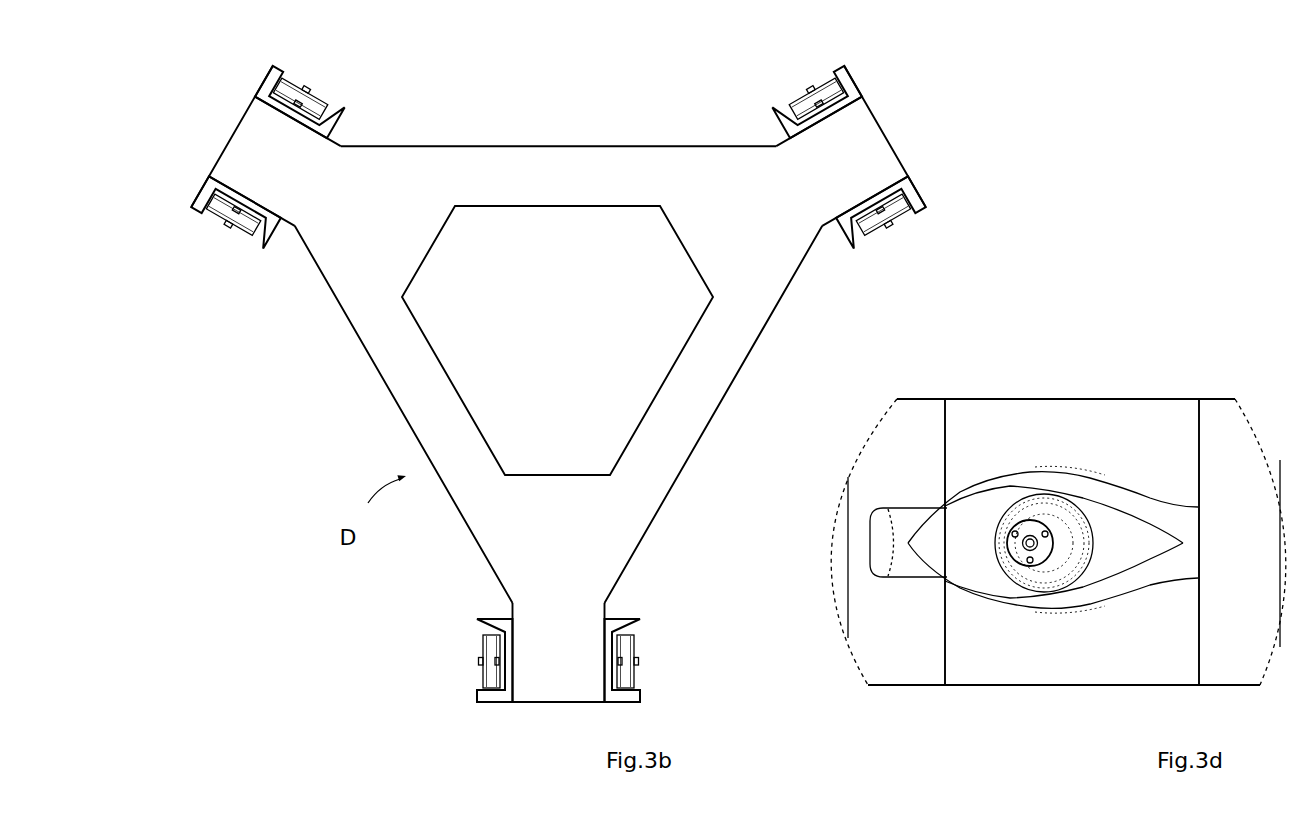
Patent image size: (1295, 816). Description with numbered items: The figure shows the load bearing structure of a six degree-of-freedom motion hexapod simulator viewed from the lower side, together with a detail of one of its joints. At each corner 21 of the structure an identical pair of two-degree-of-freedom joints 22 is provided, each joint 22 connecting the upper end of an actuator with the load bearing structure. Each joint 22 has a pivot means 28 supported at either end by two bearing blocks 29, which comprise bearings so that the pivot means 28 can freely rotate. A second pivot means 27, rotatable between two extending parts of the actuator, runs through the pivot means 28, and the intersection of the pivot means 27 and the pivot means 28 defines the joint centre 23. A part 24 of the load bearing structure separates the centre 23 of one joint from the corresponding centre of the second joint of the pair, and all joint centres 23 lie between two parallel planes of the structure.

In FIG. 3B, the corner 21 is at (305, 202).
In FIG. 3B, the two-degree-of-freedom joint 22 is at (316, 103).
In FIG. 3D, the joint centre 23 is at (1063, 567).
In FIG. 3B, the part of the load bearing structure 24 is at (247, 140).
In FIG. 3D, the part of the load bearing structure 24 is at (1002, 657).
In FIG. 3B, the second pivot means 27 is at (482, 660).
In FIG. 3D, the second pivot means 27 is at (1029, 537).
In FIG. 3B, the pivot means 28 is at (490, 652).
In FIG. 3D, the pivot means 28 is at (1140, 530).
In FIG. 3B, the bearing block 29 is at (488, 623).
In FIG. 3D, the bearing block 29 is at (904, 414).